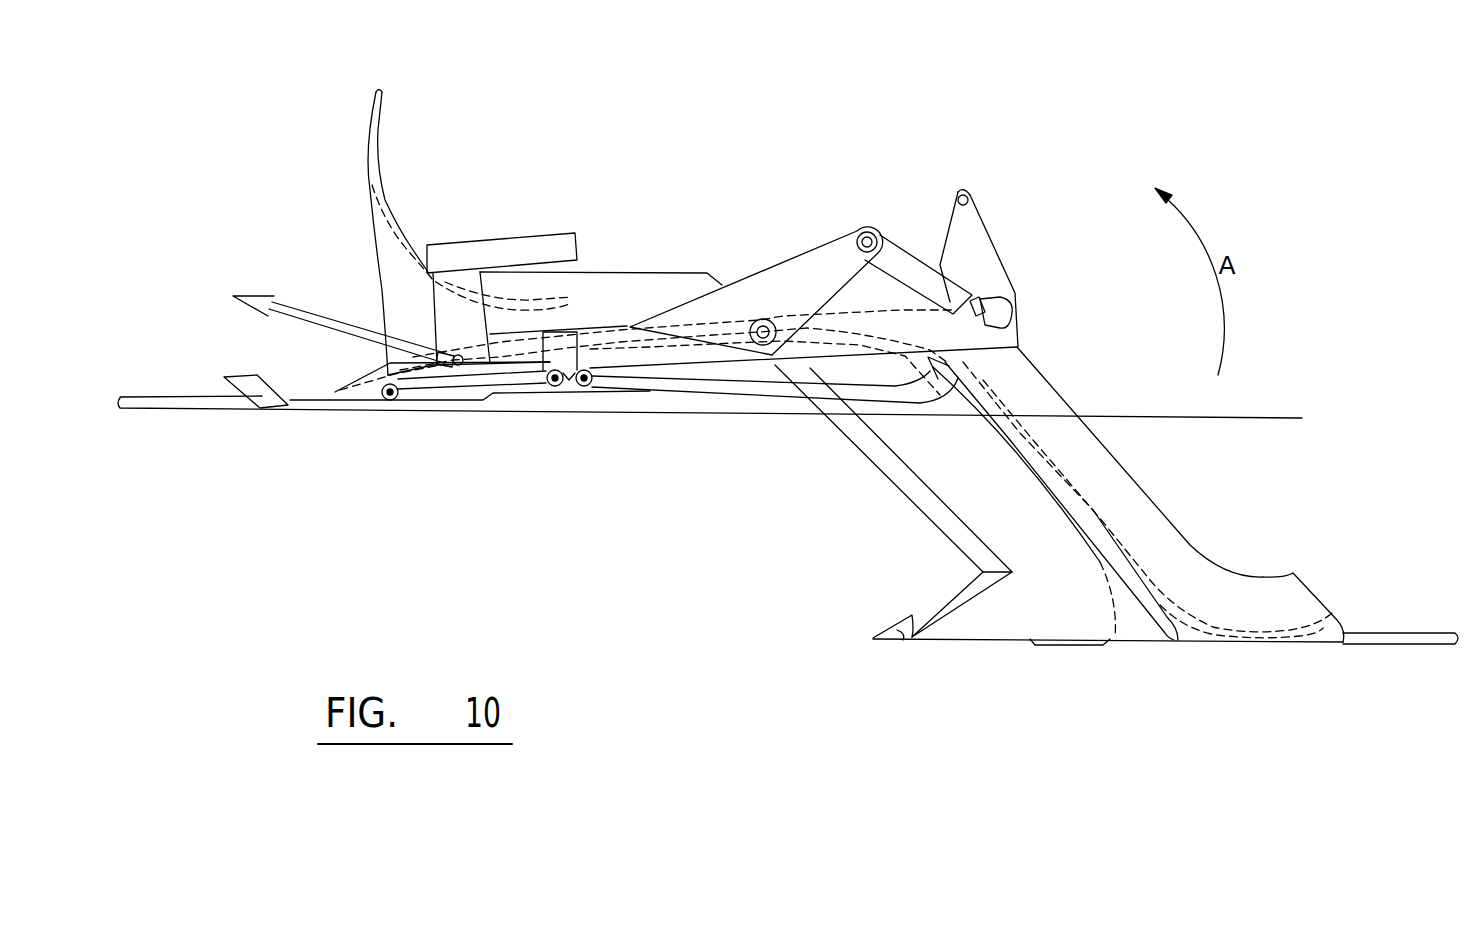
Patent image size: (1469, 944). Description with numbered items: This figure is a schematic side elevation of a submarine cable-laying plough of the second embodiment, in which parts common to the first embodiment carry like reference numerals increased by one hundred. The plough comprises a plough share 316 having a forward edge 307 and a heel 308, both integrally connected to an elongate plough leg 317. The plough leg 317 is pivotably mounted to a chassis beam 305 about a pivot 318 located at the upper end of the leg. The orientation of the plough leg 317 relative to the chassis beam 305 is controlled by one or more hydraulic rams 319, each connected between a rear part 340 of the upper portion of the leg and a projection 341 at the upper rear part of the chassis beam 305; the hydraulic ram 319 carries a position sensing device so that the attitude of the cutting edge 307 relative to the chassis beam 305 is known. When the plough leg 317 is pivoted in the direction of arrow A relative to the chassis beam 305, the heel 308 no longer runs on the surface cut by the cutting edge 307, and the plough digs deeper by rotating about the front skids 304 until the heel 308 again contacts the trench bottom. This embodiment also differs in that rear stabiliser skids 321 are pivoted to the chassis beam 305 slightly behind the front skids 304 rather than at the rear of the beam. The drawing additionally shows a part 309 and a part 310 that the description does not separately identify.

The front skids 304 is at (257, 390).
The chassis beam 305 is at (708, 307).
The forward edge 307 is at (898, 636).
The heel 308 is at (1093, 647).
The actuating lever 309 is at (330, 318).
The backrest 310 is at (403, 261).
The plough share 316 is at (982, 620).
The plough leg 317 is at (955, 478).
The pivot 318 is at (763, 319).
The hydraulic ram 319 is at (905, 265).
The rear stabiliser skids 321 is at (730, 385).
The rear part 340 is at (1013, 316).
The projection 341 is at (827, 260).